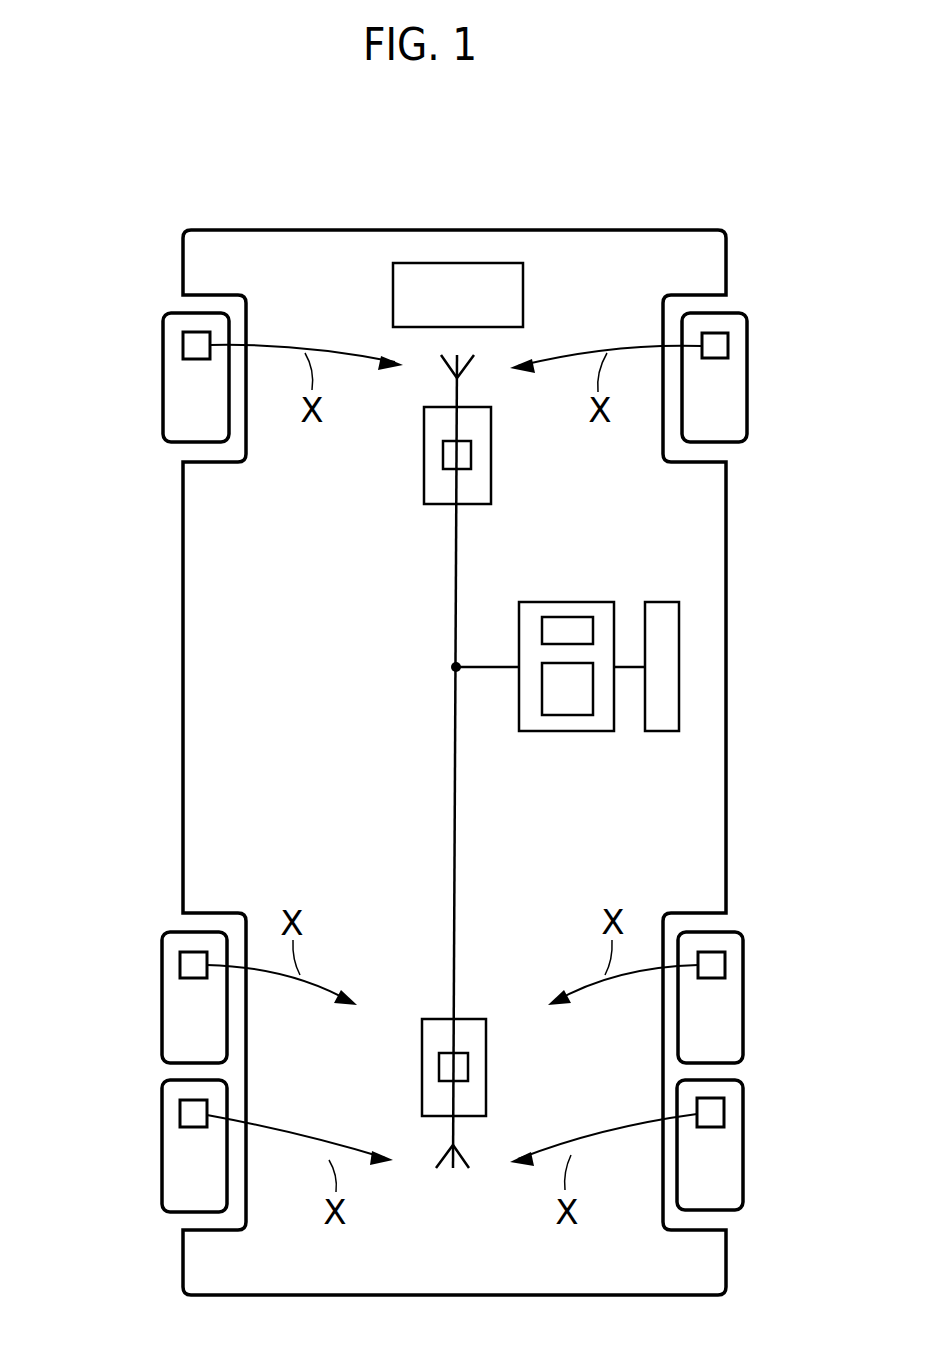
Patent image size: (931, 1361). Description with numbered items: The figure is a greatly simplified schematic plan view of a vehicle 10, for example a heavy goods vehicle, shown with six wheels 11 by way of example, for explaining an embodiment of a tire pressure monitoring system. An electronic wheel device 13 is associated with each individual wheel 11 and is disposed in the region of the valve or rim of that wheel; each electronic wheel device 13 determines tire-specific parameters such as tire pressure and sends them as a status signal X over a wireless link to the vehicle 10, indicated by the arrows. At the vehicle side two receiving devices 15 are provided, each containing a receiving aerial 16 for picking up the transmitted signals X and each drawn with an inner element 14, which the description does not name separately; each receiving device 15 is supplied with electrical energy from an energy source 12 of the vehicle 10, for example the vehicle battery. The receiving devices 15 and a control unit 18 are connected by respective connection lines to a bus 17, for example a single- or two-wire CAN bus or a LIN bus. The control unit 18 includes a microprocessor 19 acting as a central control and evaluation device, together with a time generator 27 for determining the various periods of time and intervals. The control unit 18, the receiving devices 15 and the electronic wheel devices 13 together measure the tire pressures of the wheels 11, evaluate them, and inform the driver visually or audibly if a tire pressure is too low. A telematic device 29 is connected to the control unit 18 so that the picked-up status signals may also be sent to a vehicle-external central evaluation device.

The vehicle 10 is at (106, 229).
The wheel 11 is at (163, 411).
The energy source 12 is at (523, 295).
The electronic wheel device 13 is at (183, 346).
The receiver 14 is at (424, 457).
The receiving device 15 is at (491, 457).
The receiving aerial 16 is at (457, 393).
The bus 17 is at (456, 568).
The control unit 18 is at (603, 602).
The microprocessor 19 is at (565, 715).
The time generator 27 is at (557, 617).
The telematic device 29 is at (663, 602).